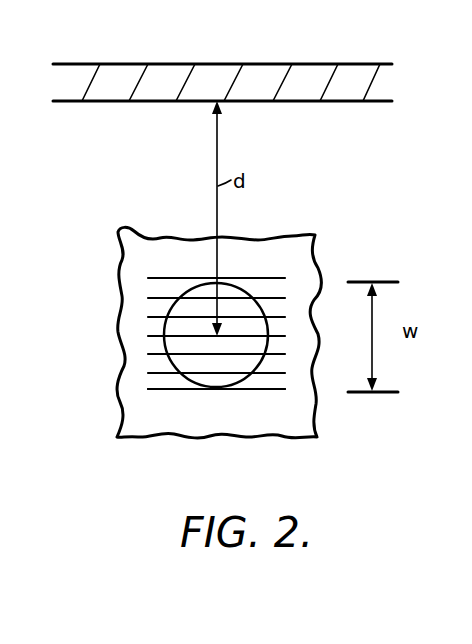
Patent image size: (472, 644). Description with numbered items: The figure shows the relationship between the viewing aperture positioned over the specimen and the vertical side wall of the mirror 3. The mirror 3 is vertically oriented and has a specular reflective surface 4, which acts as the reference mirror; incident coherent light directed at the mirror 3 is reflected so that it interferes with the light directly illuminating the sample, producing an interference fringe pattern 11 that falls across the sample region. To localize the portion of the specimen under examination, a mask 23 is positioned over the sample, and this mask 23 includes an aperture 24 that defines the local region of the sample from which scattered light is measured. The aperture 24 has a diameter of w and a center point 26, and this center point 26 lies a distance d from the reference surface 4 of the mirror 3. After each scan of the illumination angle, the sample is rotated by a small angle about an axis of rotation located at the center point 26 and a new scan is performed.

The mirror 3 is at (258, 72).
The specular reflective surface 4 is at (88, 102).
The mask 23 is at (170, 231).
The aperture 24 is at (183, 291).
The center point 26 is at (219, 332).
The fringe pattern 11 is at (162, 390).